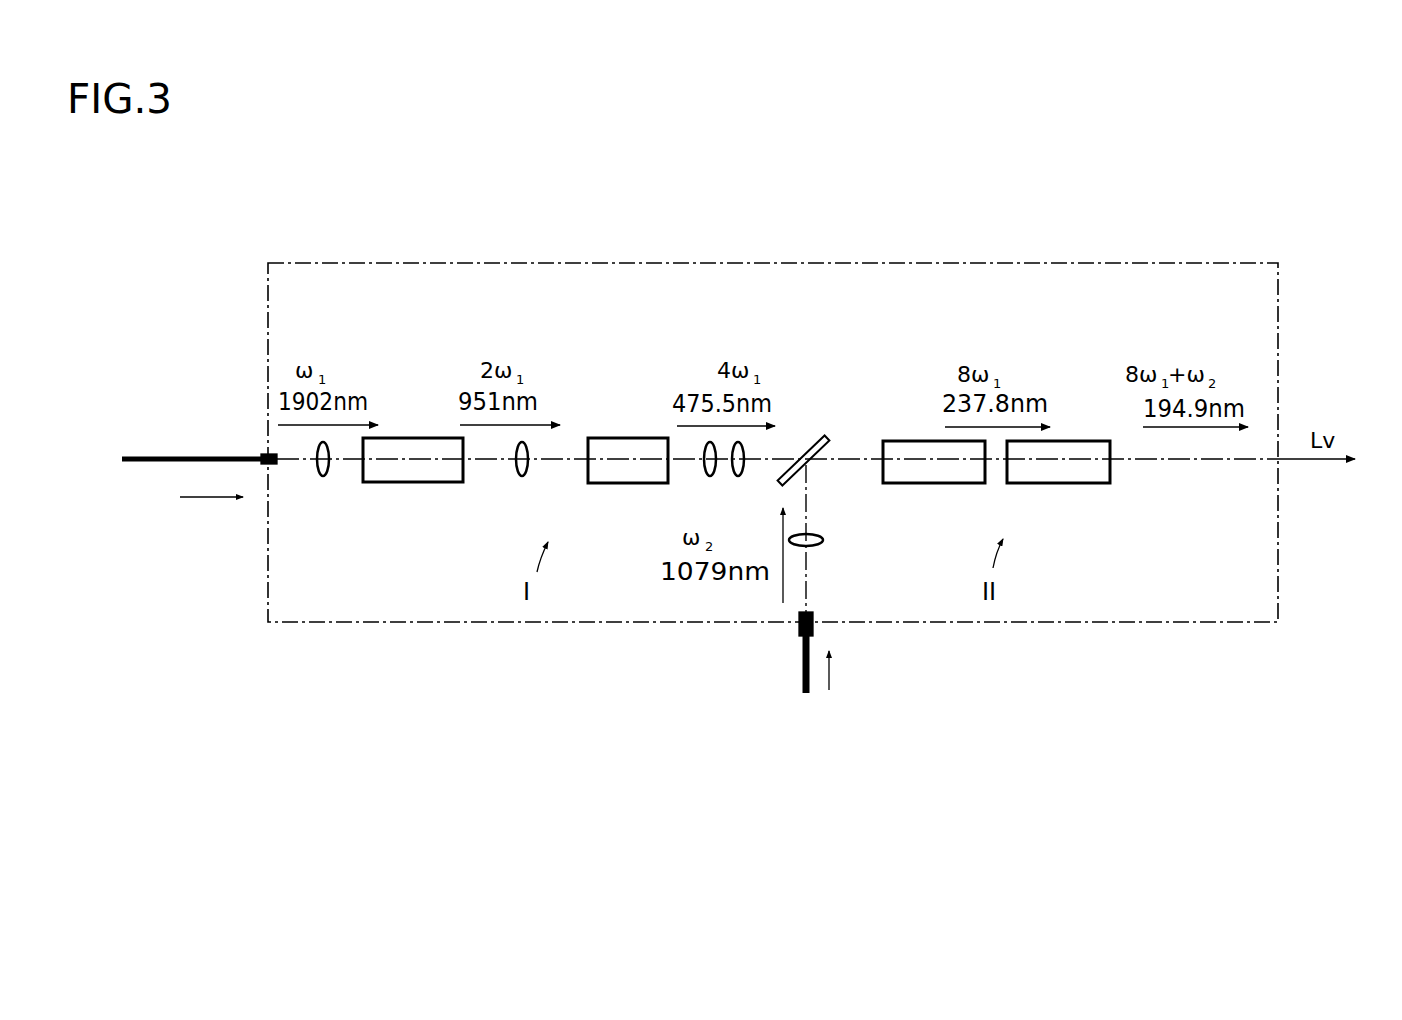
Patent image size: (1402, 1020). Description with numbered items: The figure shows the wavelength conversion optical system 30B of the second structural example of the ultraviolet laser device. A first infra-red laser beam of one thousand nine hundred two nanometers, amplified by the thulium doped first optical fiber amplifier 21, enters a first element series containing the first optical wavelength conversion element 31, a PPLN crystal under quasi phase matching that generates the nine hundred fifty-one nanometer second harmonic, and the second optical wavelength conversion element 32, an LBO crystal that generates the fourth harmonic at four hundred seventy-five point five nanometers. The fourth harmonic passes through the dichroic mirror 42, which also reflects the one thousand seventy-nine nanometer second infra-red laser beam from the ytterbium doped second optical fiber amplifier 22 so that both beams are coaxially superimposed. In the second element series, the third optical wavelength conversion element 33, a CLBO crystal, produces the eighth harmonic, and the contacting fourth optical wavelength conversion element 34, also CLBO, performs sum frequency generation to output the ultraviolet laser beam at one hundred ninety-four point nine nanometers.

The first optical fiber amplifier 21 is at (135, 472).
The second optical fiber amplifier 22 is at (787, 708).
The wavelength conversion optical system 30B is at (780, 263).
The first optical wavelength conversion element 31 is at (400, 438).
The second optical wavelength conversion element 32 is at (625, 438).
The third optical wavelength conversion element 33 is at (905, 441).
The fourth optical wavelength conversion element 34 is at (1072, 441).
The dichroic mirror 42 is at (806, 441).